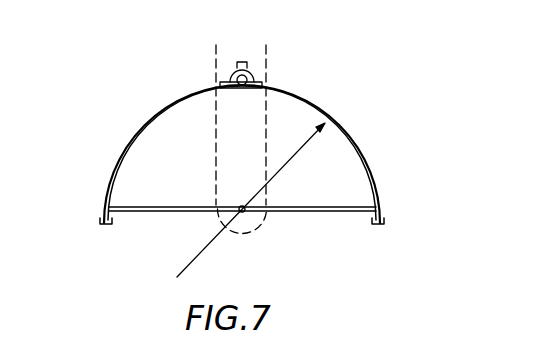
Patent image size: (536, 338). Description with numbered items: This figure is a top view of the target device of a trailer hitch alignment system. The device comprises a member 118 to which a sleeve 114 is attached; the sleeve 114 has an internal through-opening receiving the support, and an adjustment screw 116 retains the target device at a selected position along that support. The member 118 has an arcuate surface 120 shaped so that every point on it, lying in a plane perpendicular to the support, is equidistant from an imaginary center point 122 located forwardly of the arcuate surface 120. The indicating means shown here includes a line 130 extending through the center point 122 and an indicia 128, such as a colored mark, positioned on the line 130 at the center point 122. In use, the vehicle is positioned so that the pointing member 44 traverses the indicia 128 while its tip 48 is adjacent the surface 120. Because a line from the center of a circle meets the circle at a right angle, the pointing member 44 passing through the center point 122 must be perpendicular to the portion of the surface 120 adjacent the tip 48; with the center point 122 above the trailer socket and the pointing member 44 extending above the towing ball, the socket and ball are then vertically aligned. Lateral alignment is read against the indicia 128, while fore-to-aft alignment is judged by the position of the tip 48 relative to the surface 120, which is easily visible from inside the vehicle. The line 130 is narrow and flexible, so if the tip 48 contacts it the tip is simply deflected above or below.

The pointing member 44 is at (196, 255).
The tip 48 is at (322, 130).
The sleeve 114 is at (254, 74).
The adjustment screw 116 is at (246, 63).
The member 118 is at (355, 145).
The arcuate surface 120 is at (146, 127).
The center point 122 is at (240, 204).
The indicia 128 is at (245, 233).
The line 130 is at (329, 213).